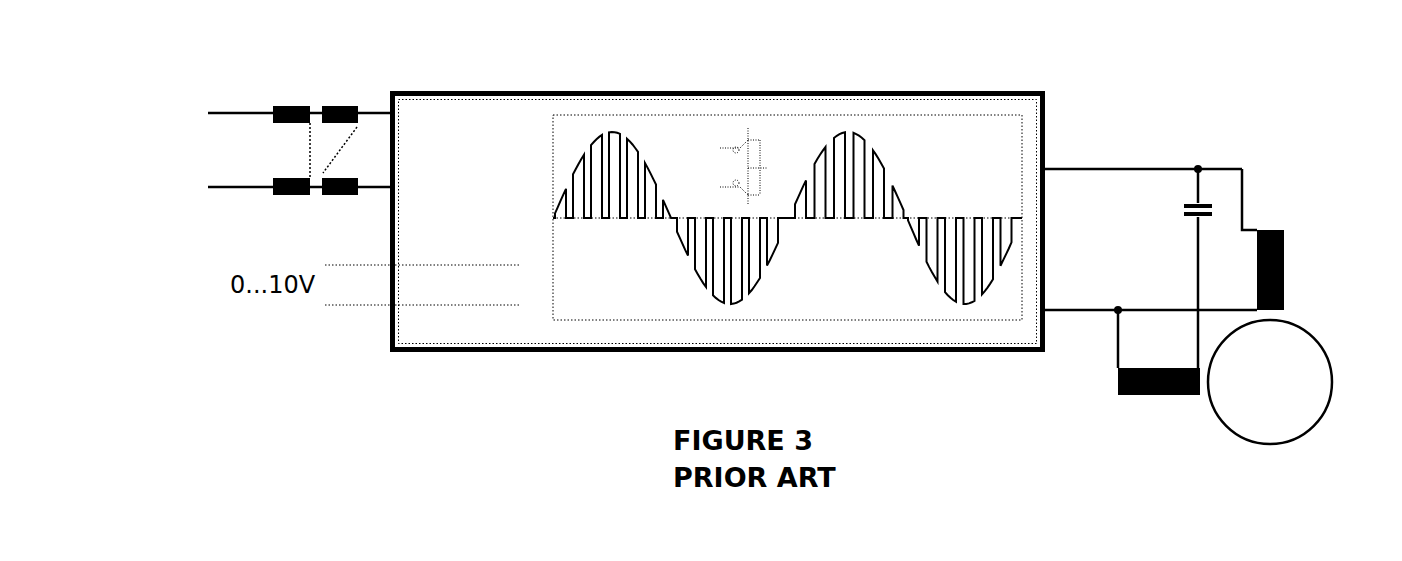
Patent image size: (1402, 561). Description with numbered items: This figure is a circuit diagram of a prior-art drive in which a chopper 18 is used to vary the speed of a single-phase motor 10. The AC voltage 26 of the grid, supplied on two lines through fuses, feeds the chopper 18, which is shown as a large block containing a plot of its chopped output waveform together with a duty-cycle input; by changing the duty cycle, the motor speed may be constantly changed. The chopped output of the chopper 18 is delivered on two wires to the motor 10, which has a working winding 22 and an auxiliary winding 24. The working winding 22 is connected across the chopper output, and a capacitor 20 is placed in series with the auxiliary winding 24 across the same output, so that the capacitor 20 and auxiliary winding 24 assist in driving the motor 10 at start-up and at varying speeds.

The motor 10 is at (1230, 430).
The chopper 18 is at (885, 92).
The capacitor 20 is at (1220, 200).
The working winding 22 is at (1290, 273).
The auxiliary winding 24 is at (1147, 400).
The AC voltage 26 is at (213, 195).